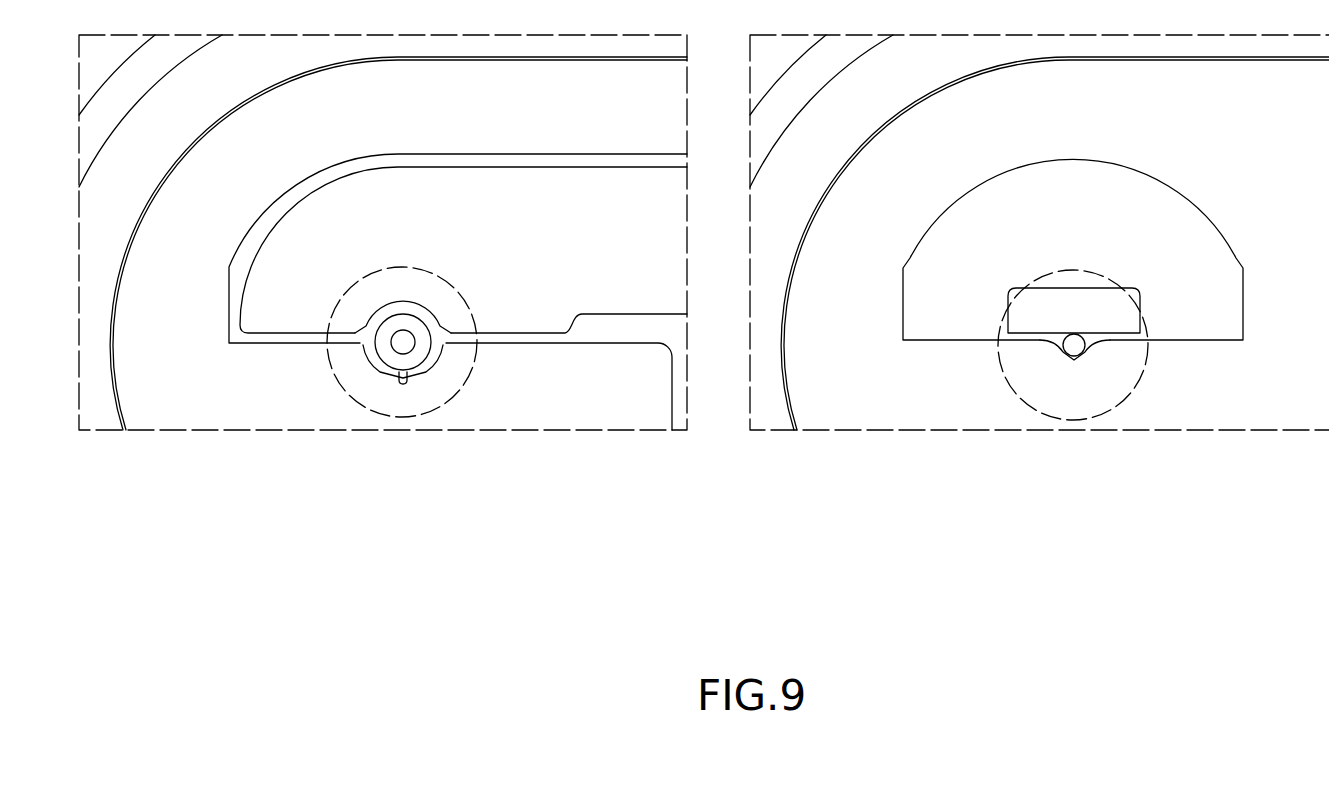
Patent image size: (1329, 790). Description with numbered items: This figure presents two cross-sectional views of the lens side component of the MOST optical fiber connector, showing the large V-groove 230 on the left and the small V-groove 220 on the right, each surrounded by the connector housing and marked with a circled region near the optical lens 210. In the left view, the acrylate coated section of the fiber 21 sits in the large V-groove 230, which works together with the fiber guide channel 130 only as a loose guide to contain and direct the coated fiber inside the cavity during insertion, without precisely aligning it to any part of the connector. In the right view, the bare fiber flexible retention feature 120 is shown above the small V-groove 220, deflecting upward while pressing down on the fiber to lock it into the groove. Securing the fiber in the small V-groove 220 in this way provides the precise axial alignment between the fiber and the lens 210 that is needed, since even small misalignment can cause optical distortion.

The acrylate coated section of the fiber 21 is at (405, 330).
The bare fiber flexible retention feature 120 is at (1052, 300).
The fiber guide channel 130 is at (372, 328).
The optical lens 210 is at (437, 409).
The small V-groove 220 is at (1073, 358).
The large V-groove 230 is at (398, 374).